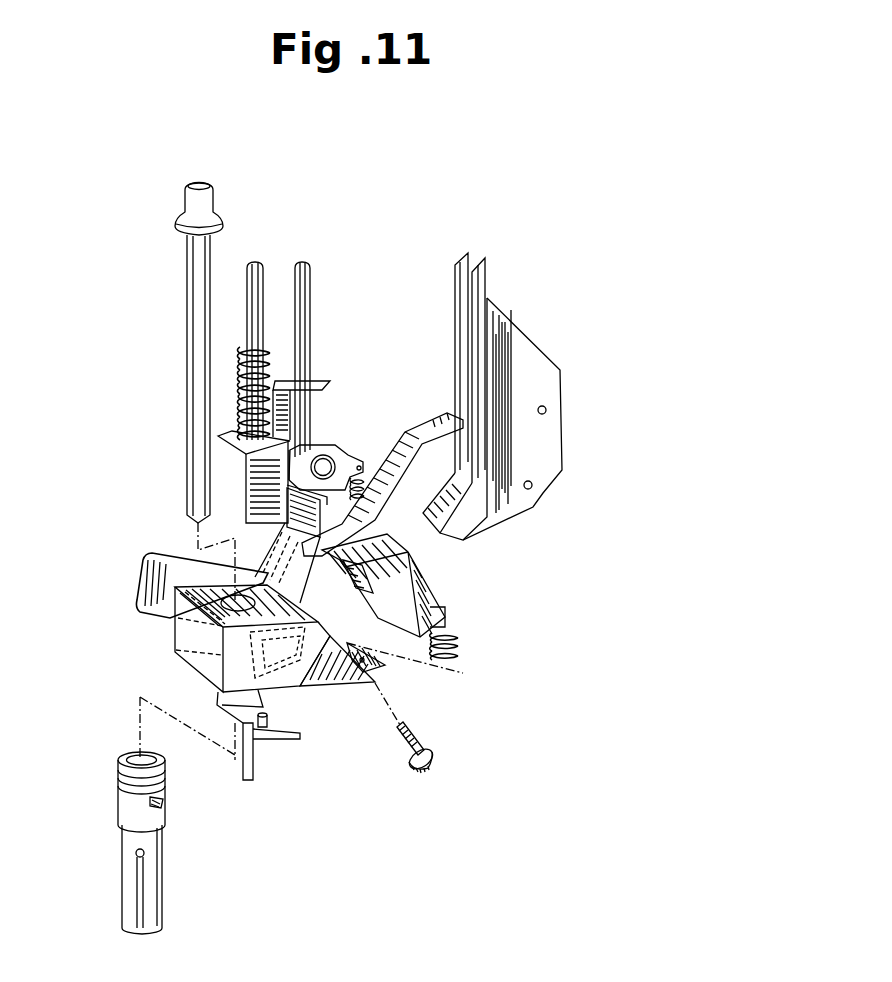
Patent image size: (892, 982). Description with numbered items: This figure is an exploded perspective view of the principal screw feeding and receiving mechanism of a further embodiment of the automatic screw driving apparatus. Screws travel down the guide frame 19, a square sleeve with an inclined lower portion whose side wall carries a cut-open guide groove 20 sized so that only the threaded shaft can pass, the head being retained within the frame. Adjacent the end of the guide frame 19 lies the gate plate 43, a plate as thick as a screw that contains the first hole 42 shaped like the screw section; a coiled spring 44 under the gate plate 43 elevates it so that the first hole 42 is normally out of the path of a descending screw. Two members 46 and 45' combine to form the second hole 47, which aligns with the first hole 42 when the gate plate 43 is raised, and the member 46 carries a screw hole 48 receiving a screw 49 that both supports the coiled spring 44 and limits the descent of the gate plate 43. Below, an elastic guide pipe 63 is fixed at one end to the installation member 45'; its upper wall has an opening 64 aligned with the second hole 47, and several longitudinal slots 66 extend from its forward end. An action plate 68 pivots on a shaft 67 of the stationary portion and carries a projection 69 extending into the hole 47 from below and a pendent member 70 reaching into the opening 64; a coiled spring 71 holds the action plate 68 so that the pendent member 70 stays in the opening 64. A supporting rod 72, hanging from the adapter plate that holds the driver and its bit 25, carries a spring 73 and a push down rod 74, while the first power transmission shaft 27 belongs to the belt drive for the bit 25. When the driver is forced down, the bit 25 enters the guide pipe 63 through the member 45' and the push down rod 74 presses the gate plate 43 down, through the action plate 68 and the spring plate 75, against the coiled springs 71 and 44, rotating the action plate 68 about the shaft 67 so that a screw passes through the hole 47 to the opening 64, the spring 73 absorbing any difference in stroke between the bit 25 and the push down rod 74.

The guide frame 19 is at (508, 340).
The guide groove 20 is at (463, 298).
The bit 25 is at (190, 289).
The first power transmission shaft 27 is at (310, 280).
The first hole 42 is at (365, 578).
The gate plate 43 is at (413, 590).
The coiled spring 44 is at (460, 645).
The installation member 45' is at (216, 654).
The member 46 is at (343, 680).
The second hole 47 is at (287, 660).
The screw hole 48 is at (367, 668).
The screw 49 is at (432, 750).
The guide pipe 63 is at (128, 802).
The opening 64 is at (162, 802).
The slots 66 is at (140, 897).
The shaft 67 is at (326, 462).
The action plate 68 is at (153, 577).
The projection 69 is at (270, 738).
The pendent member 70 is at (255, 776).
The coiled spring 71 is at (357, 476).
The supporting rod 72 is at (262, 280).
The spring 73 is at (268, 353).
The push down rod 74 is at (262, 458).
The spring plate 75 is at (407, 443).